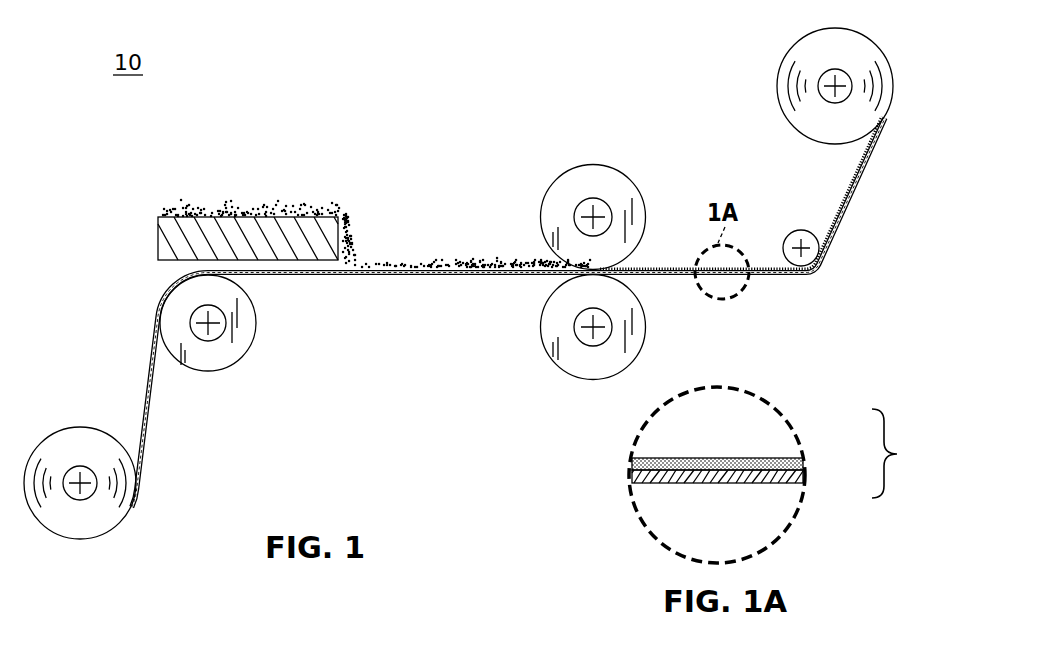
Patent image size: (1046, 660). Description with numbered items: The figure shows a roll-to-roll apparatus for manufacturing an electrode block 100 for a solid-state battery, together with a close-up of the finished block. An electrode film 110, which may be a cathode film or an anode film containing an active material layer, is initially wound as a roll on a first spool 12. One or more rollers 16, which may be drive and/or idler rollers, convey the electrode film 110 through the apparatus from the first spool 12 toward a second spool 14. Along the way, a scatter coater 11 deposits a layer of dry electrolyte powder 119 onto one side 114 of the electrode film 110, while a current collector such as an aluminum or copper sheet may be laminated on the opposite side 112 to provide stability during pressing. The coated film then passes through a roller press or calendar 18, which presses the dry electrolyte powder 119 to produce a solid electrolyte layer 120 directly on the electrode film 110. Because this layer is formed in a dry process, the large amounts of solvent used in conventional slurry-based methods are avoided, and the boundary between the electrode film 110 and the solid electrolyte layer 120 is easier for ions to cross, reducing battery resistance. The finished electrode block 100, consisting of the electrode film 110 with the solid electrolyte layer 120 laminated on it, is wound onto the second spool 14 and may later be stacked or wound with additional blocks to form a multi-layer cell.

In FIG. 1, the scatter coater 11 is at (173, 233).
In FIG. 1, the first spool 12 is at (91, 525).
In FIG. 1, the second spool 14 is at (818, 50).
In FIG. 1, the rollers 16 is at (230, 352).
In FIG. 1, the roller press or calendar 18 is at (588, 172).
In FIG. 1A, the electrode block 100 is at (787, 453).
In FIG. 1, the electrode film 110 is at (302, 277).
In FIG. 1A, the electrode film 110 is at (792, 476).
In FIG. 1, the opposite side 112 is at (152, 413).
In FIG. 1, the one side 114 is at (136, 385).
In FIG. 1, the dry electrolyte powder 119 is at (370, 255).
In FIG. 1, the solid electrolyte layer 120 is at (672, 268).
In FIG. 1A, the solid electrolyte layer 120 is at (787, 458).